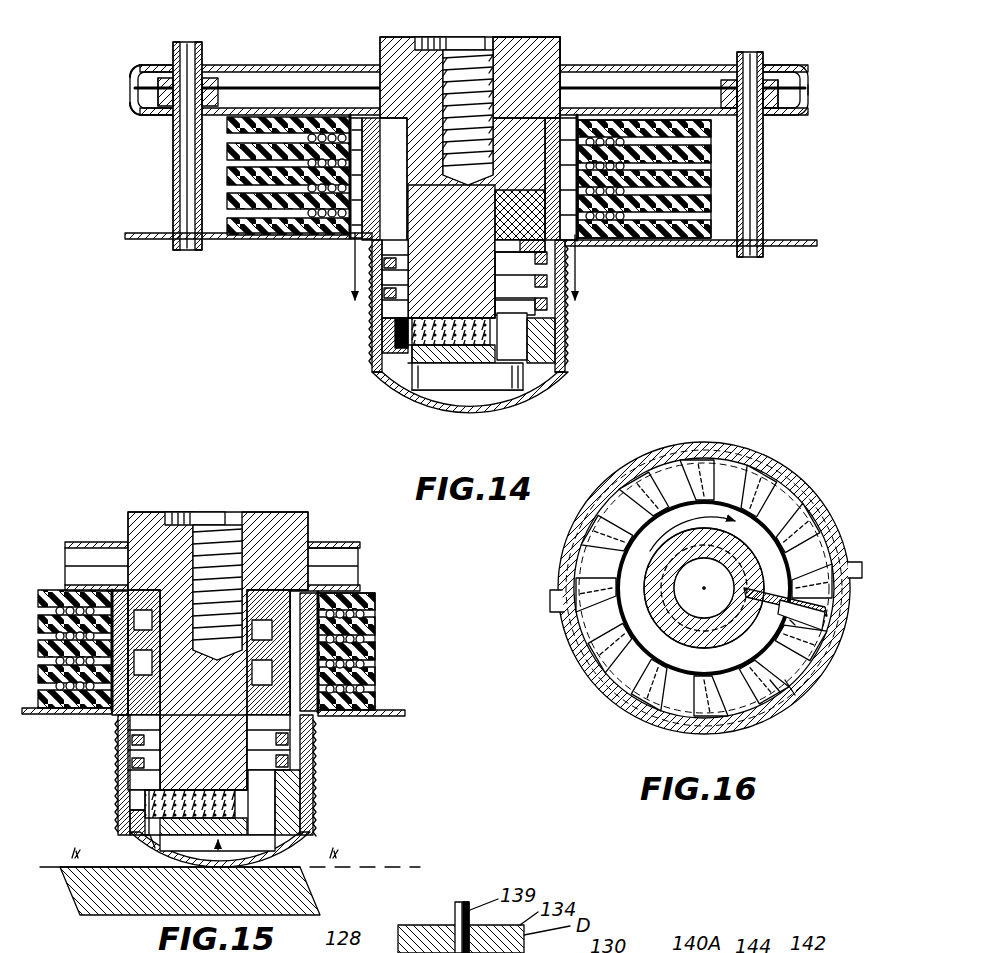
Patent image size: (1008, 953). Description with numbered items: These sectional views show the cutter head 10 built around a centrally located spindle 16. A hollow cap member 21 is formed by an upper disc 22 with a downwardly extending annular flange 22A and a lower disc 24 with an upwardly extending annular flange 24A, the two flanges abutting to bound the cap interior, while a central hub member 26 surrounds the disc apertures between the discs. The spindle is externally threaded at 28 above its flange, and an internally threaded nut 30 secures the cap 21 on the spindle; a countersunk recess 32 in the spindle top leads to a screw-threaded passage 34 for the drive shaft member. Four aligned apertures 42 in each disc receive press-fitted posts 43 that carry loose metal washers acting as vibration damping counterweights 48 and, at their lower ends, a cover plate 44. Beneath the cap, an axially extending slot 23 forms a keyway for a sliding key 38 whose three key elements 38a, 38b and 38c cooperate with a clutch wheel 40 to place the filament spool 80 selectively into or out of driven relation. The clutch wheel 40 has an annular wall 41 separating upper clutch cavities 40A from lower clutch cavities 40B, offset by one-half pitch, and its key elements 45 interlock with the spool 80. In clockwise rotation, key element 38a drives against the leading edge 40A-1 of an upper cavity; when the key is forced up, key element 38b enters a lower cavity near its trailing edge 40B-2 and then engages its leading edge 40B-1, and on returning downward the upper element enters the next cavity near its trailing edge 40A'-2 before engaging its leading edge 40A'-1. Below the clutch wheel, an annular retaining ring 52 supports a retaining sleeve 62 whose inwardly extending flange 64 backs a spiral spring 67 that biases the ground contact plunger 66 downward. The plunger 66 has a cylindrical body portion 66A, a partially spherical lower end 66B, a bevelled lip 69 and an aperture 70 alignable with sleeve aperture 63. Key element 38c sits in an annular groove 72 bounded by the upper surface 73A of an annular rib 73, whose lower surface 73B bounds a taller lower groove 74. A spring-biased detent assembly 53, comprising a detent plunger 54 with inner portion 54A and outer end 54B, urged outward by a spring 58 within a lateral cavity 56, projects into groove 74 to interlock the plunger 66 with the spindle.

In FIG. 14, the cutter head 10 is at (843, 96).
In FIG. 14, the spindle 16 is at (352, 290).
In FIG. 15, the spindle 16 is at (180, 530).
In FIG. 16, the spindle 16 is at (640, 630).
In FIG. 14, the hollow cap member 21 is at (262, 66).
In FIG. 15, the hollow cap member 21 is at (322, 544).
In FIG. 14, the upper disc 22 is at (210, 64).
In FIG. 14, the downwardly extending annular flange 22A is at (132, 76).
In FIG. 15, the axially extending recess or slot 23 is at (260, 840).
In FIG. 14, the lower disc 24 is at (150, 114).
In FIG. 14, the upwardly extending annular flange 24A is at (130, 102).
In FIG. 14, the central hub member 26 is at (380, 96).
In FIG. 15, the central hub member 26 is at (128, 546).
In FIG. 14, the externally threaded portion 28 is at (530, 56).
In FIG. 14, the internally threaded nut 30 is at (562, 56).
In FIG. 15, the internally threaded nut 30 is at (310, 512).
In FIG. 14, the countersunk recess 32 is at (420, 40).
In FIG. 15, the countersunk recess 32 is at (232, 512).
In FIG. 14, the screw-threaded passage 34 is at (462, 80).
In FIG. 15, the screw-threaded passage 34 is at (215, 540).
In FIG. 14, the sliding key 38 is at (505, 140).
In FIG. 14, the key element 38a is at (570, 120).
In FIG. 16, the key element 38a is at (808, 600).
In FIG. 14, the key element 38b is at (522, 216).
In FIG. 15, the key element 38b is at (378, 692).
In FIG. 14, the key element 38c is at (522, 306).
In FIG. 15, the key element 38c is at (318, 580).
In FIG. 14, the clutch wheel 40 is at (583, 118).
In FIG. 15, the clutch wheel 40 is at (376, 620).
In FIG. 16, the clutch wheel 40 is at (782, 490).
In FIG. 14, the upper clutch cavity 40A is at (296, 122).
In FIG. 15, the upper clutch cavity 40A is at (234, 637).
In FIG. 16, the upper clutch cavity 40A is at (883, 565).
In FIG. 16, the leading edge of upper clutch cavity 40A-1 is at (800, 616).
In FIG. 16, the leading edge of next upper clutch cavity 40A'-1 is at (828, 718).
In FIG. 16, the trailing edge of next upper clutch cavity 40A'-2 is at (856, 645).
In FIG. 14, the lower clutch cavity 40B is at (632, 196).
In FIG. 15, the lower clutch cavity 40B is at (372, 648).
In FIG. 16, the lower clutch cavity 40B is at (830, 540).
In FIG. 16, the leading edge of lower clutch cavity 40B-1 is at (812, 668).
In FIG. 16, the trailing edge of lower clutch cavity 40B-2 is at (836, 590).
In FIG. 14, the annular wall 41 is at (362, 102).
In FIG. 14, the apertures 42 is at (170, 77).
In FIG. 14, the post 43 is at (172, 197).
In FIG. 14, the cover plate 44 is at (130, 241).
In FIG. 15, the cover plate 44 is at (398, 714).
In FIG. 14, the key elements 45 is at (370, 135).
In FIG. 16, the key elements 45 is at (548, 598).
In FIG. 14, the counterweight 48 is at (160, 78).
In FIG. 14, the annular retaining ring 52 is at (580, 243).
In FIG. 15, the annular retaining ring 52 is at (110, 715).
In FIG. 15, the spring-biased detent assembly 53 is at (135, 800).
In FIG. 14, the detent plunger 54 is at (386, 334).
In FIG. 15, the detent plunger 54 is at (130, 796).
In FIG. 15, the inner end portion of detent plunger 54A is at (135, 792).
In FIG. 15, the laterally outer end portion of detent plunger 54B is at (140, 845).
In FIG. 15, the laterally-extending cavity 56 is at (150, 848).
In FIG. 14, the spring member 58 is at (460, 346).
In FIG. 15, the spring member 58 is at (230, 820).
In FIG. 14, the retaining sleeve 62 is at (562, 342).
In FIG. 15, the retaining sleeve 62 is at (312, 805).
In FIG. 14, the aperture 63 is at (384, 352).
In FIG. 14, the radially inwardly extending flange 64 is at (365, 243).
In FIG. 15, the radially inwardly extending flange 64 is at (330, 720).
In FIG. 14, the ground contact plunger 66 is at (547, 392).
In FIG. 15, the ground contact plunger 66 is at (300, 838).
In FIG. 14, the cylindrical body portion 66A is at (562, 362).
In FIG. 14, the lower end portion of partially spherical shape 66B is at (502, 406).
In FIG. 14, the spiral spring member 67 is at (575, 262).
In FIG. 15, the spiral spring member 67 is at (300, 738).
In FIG. 14, the annular bevelled lip 69 is at (563, 330).
In FIG. 14, the vertical-slot-like aperture 70 is at (405, 348).
In FIG. 14, the annular groove 72 is at (410, 340).
In FIG. 15, the annular groove 72 is at (150, 790).
In FIG. 14, the annular rib 73 is at (522, 347).
In FIG. 15, the upper surface of annular rib 73A is at (250, 760).
In FIG. 15, the lower surface of annular rib 73B is at (277, 790).
In FIG. 14, the lower annular groove 74 is at (535, 372).
In FIG. 15, the lower annular groove 74 is at (290, 820).
In FIG. 14, the filament spool 80 is at (712, 150).
In FIG. 15, the filament spool 80 is at (380, 672).